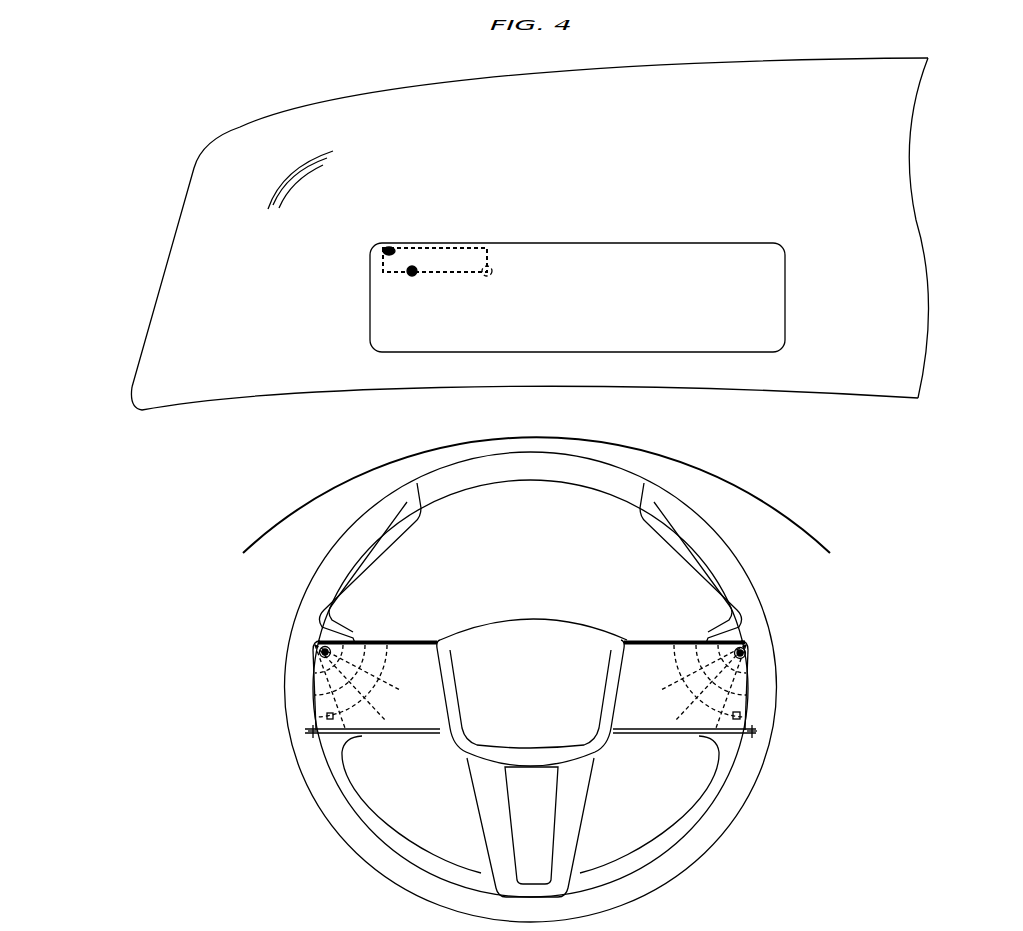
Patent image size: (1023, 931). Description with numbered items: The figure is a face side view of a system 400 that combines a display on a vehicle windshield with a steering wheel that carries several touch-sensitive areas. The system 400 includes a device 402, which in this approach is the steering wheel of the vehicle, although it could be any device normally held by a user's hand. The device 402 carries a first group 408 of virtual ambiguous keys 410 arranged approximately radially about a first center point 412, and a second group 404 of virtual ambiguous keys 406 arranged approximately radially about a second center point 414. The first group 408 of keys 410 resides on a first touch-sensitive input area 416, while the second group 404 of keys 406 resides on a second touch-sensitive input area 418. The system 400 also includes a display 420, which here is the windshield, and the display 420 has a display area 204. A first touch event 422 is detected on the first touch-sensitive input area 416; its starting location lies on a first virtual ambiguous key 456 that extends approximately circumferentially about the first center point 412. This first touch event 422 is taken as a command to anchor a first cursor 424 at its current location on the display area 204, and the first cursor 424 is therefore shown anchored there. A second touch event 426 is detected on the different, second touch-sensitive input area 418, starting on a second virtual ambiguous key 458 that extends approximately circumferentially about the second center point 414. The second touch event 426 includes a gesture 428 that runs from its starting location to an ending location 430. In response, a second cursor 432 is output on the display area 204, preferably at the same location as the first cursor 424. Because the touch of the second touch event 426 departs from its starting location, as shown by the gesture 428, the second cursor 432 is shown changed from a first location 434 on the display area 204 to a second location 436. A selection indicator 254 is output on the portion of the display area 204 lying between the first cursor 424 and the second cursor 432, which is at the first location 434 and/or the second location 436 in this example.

The system 400 is at (170, 92).
The selection indicator 254 is at (400, 244).
The display area 204 is at (669, 262).
The display 420 is at (916, 303).
The second cursor 432 is at (401, 275).
The first location 434 is at (427, 262).
The first cursor 424 is at (492, 268).
The second location 436 is at (378, 256).
The device 402 is at (770, 640).
The second group 404 is at (740, 752).
The virtual ambiguous keys 406 is at (705, 703).
The first group 408 is at (331, 745).
The virtual ambiguous keys 410 is at (327, 642).
The first center point 412 is at (313, 731).
The second center point 414 is at (757, 732).
The first touch-sensitive input area 416 is at (425, 662).
The second touch-sensitive input area 418 is at (648, 660).
The first touch event 422 is at (357, 660).
The second touch event 426 is at (693, 675).
The gesture 428 is at (692, 672).
The ending location 430 is at (700, 662).
The first virtual ambiguous key 456 is at (372, 660).
The second virtual ambiguous key 458 is at (690, 676).